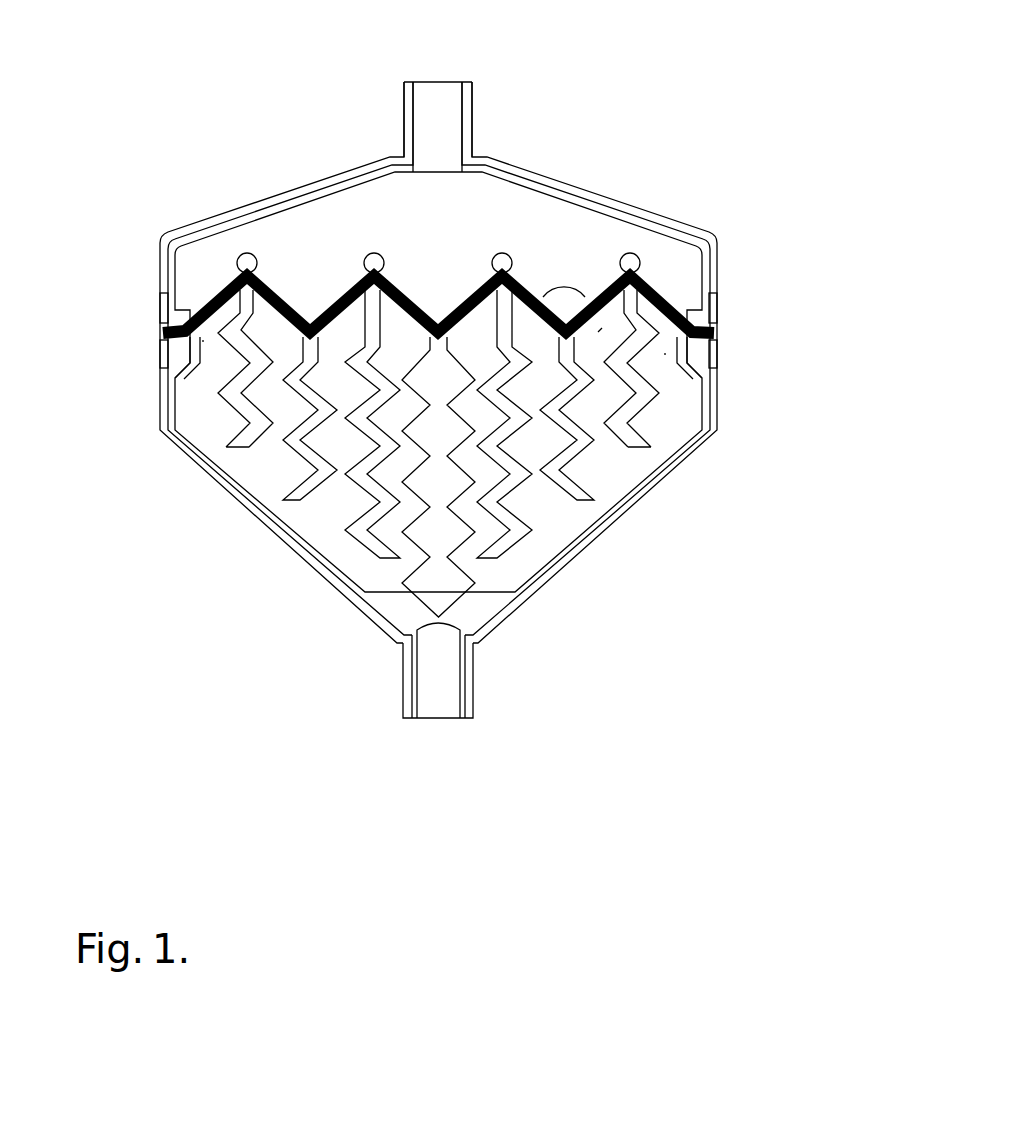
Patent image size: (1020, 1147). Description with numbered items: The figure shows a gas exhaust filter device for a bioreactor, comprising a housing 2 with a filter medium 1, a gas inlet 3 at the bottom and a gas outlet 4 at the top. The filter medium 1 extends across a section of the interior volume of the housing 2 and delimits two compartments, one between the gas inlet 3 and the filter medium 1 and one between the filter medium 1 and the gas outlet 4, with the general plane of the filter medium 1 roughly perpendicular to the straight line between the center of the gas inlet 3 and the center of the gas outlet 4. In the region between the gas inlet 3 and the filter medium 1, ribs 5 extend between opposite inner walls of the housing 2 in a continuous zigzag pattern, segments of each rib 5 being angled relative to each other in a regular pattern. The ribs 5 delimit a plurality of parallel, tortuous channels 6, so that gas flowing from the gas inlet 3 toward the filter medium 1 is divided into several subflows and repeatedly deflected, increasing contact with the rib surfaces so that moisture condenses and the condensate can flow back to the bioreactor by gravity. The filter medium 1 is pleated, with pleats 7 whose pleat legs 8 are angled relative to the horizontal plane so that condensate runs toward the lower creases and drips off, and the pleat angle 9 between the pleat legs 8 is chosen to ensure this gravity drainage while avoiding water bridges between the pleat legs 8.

The filter medium 1 is at (528, 280).
The housing 2 is at (278, 188).
The gas inlet 3 is at (403, 712).
The gas outlet 4 is at (470, 92).
The ribs 5 is at (408, 597).
The channels 6 is at (400, 420).
The pleats 7 is at (443, 337).
The pleat legs 8 is at (600, 330).
The pleat angle 9 is at (562, 282).